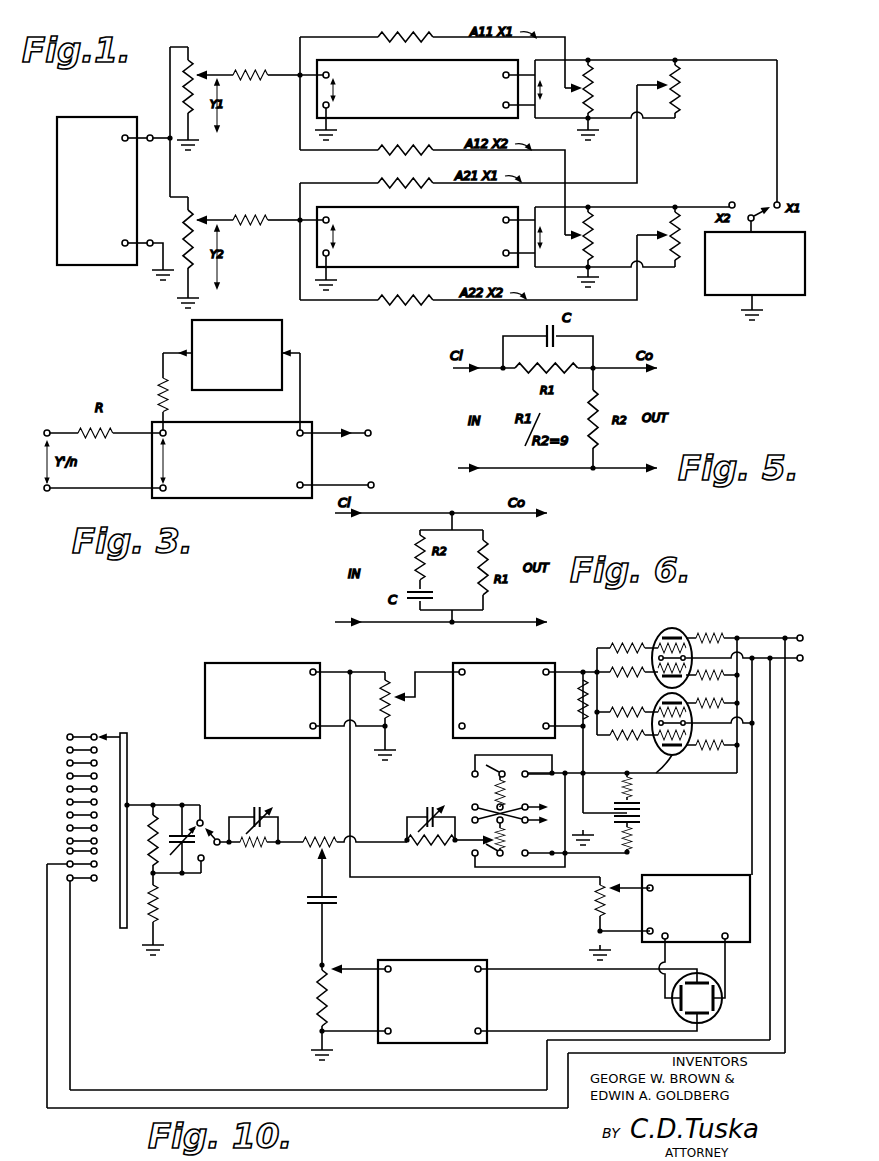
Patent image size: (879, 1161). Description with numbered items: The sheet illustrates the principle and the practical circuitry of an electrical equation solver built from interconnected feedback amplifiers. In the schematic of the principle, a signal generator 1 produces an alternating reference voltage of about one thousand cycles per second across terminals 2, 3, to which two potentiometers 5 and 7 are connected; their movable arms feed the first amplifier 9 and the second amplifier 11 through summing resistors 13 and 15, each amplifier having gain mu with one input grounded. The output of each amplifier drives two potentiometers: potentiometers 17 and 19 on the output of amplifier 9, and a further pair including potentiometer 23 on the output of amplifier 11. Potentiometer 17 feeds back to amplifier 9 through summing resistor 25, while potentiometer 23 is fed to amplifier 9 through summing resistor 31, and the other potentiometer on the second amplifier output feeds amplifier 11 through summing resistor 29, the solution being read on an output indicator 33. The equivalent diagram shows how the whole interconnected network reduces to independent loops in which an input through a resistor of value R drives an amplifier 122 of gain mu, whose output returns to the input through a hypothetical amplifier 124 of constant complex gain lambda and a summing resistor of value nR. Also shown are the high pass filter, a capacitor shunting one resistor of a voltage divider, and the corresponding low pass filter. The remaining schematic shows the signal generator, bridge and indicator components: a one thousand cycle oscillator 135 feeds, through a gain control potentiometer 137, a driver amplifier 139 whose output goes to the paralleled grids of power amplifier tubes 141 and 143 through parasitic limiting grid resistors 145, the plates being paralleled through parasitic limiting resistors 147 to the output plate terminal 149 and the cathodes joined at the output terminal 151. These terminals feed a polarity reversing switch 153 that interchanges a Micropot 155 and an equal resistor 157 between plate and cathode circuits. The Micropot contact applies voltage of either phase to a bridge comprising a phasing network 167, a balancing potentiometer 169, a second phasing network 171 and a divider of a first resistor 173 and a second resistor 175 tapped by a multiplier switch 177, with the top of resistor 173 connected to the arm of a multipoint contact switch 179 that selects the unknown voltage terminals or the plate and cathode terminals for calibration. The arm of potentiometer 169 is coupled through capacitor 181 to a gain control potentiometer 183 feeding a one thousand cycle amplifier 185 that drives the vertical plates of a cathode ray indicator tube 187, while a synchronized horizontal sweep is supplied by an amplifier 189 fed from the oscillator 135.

In FIG. 1, the signal generator 1 is at (92, 120).
In FIG. 1, the output terminal 2 is at (147, 135).
In FIG. 1, the output terminal 3 is at (151, 243).
In FIG. 1, the potentiometer 5 is at (198, 71).
In FIG. 1, the potentiometer 7 is at (198, 218).
In FIG. 1, the X1 amplifier 9 is at (497, 70).
In FIG. 1, the X2 amplifier 11 is at (488, 196).
In FIG. 1, the summing resistor 13 is at (257, 54).
In FIG. 1, the summing resistor 15 is at (245, 236).
In FIG. 1, the potentiometer 17 is at (592, 96).
In FIG. 1, the potentiometer 19 is at (688, 94).
In FIG. 1, the potentiometer 23 is at (594, 238).
In FIG. 1, the summing resistor 25 is at (406, 34).
In FIG. 1, the summing resistor 29 is at (390, 308).
In FIG. 1, the summing resistor 31 is at (432, 146).
In FIG. 1, the output indicator 33 is at (705, 292).
In FIG. 3, the amplifier 122 is at (306, 428).
In FIG. 3, the hypothetical amplifier 124 is at (192, 320).
In FIG. 10, the 1000 cycle oscillator 135 is at (280, 657).
In FIG. 10, the gain control potentiometer 137 is at (405, 665).
In FIG. 10, the driver amplifier 139 is at (486, 663).
In FIG. 10, the power amplifier tube 141 is at (672, 628).
In FIG. 10, the power amplifier tube 143 is at (656, 773).
In FIG. 10, the parasitic limiting grid resistors 145 is at (618, 642).
In FIG. 10, the parasitic limiting resistors 147 is at (698, 648).
In FIG. 10, the output plate terminal 149 is at (788, 636).
In FIG. 10, the output terminal 151 is at (799, 664).
In FIG. 10, the polarity reversing switch 153 is at (472, 791).
In FIG. 10, the Micropot 155 is at (504, 844).
In FIG. 10, the resistor 157 is at (504, 798).
In FIG. 10, the phasing network 167 is at (440, 871).
In FIG. 10, the balancing potentiometer 169 is at (318, 840).
In FIG. 10, the phasing network 171 is at (262, 871).
In FIG. 10, the first resistor 173 is at (144, 812).
In FIG. 10, the second resistor 175 is at (157, 907).
In FIG. 10, the multiplier switch 177 is at (236, 818).
In FIG. 10, the multipoint contact switch 179 is at (104, 719).
In FIG. 10, the capacitor 181 is at (332, 912).
In FIG. 10, the gain control potentiometer 183 is at (310, 993).
In FIG. 10, the 1000 cycle amplifier 185 is at (448, 960).
In FIG. 10, the cathode ray indicator tube 187 is at (722, 1006).
In FIG. 10, the amplifier 189 is at (698, 866).